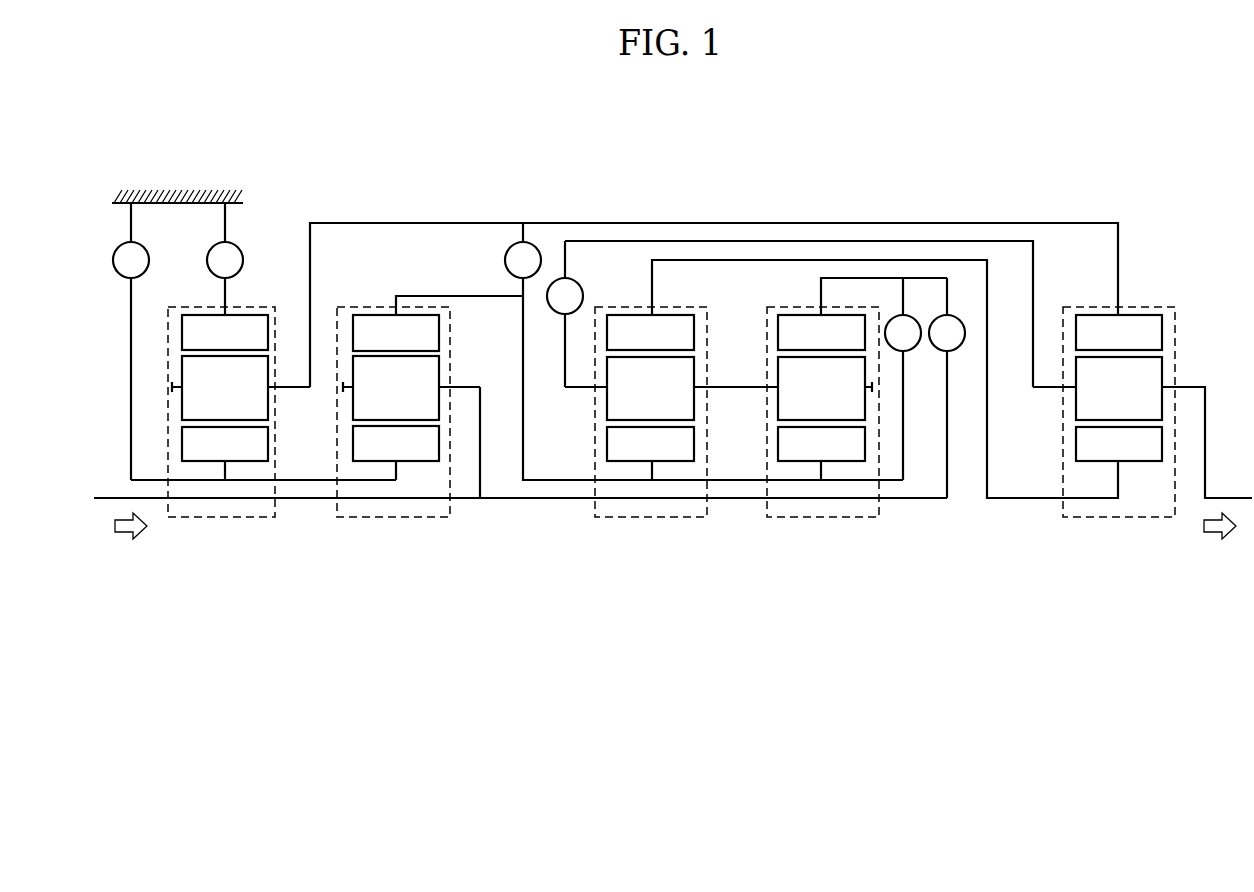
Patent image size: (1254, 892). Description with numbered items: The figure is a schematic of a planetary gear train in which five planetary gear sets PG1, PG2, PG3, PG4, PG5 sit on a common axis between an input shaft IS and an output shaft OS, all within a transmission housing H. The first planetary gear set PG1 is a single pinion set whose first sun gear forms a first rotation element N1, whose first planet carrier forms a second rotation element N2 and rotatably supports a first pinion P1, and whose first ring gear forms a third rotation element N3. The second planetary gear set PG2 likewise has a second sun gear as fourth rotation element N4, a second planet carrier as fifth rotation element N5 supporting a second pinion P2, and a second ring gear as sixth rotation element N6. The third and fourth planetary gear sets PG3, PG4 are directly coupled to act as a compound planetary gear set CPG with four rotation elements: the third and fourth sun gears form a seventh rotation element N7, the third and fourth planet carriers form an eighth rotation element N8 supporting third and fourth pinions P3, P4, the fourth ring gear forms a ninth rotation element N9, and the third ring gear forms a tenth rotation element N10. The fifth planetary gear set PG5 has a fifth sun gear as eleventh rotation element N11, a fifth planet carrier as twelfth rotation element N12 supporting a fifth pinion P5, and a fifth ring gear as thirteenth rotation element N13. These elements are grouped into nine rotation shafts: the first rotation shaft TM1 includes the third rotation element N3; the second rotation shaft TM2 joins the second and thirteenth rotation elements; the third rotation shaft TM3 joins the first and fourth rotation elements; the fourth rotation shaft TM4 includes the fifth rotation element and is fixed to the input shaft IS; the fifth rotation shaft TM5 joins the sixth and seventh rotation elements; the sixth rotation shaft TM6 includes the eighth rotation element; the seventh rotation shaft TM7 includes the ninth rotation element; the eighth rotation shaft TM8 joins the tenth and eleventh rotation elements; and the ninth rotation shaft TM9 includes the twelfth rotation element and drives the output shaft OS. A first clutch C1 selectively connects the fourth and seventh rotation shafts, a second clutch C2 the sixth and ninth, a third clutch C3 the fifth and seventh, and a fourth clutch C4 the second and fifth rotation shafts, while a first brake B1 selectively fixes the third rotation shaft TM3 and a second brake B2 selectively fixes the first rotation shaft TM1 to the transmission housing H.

The transmission housing H is at (190, 190).
The first brake B1 is at (131, 341).
The second brake B2 is at (225, 240).
The first clutch C1 is at (947, 388).
The second clutch C2 is at (565, 314).
The third clutch C3 is at (903, 379).
The fourth clutch C4 is at (523, 259).
The first rotation shaft TM1 is at (226, 292).
The second rotation shaft TM2 is at (552, 212).
The third rotation shaft TM3 is at (318, 494).
The fourth rotation shaft TM4 is at (475, 451).
The fifth rotation shaft TM5 is at (547, 494).
The sixth rotation shaft TM6 is at (738, 403).
The seventh rotation shaft TM7 is at (857, 266).
The eighth rotation shaft TM8 is at (919, 247).
The ninth rotation shaft TM9 is at (1029, 254).
The first planetary gear set PG1 is at (221, 530).
The second planetary gear set PG2 is at (391, 530).
The third planetary gear set PG3 is at (648, 530).
The fourth planetary gear set PG4 is at (820, 530).
The fifth planetary gear set PG5 is at (1116, 530).
The compound planetary gear set CPG is at (830, 600).
The first rotation element N1 is at (225, 444).
The second rotation element N2 is at (294, 390).
The third rotation element N3 is at (225, 332).
The fourth rotation element N4 is at (396, 443).
The fifth rotation element N5 is at (461, 387).
The sixth rotation element N6 is at (438, 323).
The seventh rotation element N7 is at (736, 444).
The eighth rotation element N8 is at (578, 389).
The ninth rotation element N9 is at (821, 332).
The tenth rotation element N10 is at (650, 332).
The eleventh rotation element N11 is at (1119, 444).
The twelfth rotation element N12 is at (1047, 388).
The thirteenth rotation element N13 is at (1119, 332).
The first pinion P1 is at (220, 388).
The second pinion P2 is at (391, 388).
The third pinion P3 is at (650, 388).
The fourth pinion P4 is at (825, 388).
The fifth pinion P5 is at (1119, 388).
The input shaft IS is at (291, 500).
The output shaft OS is at (1220, 497).